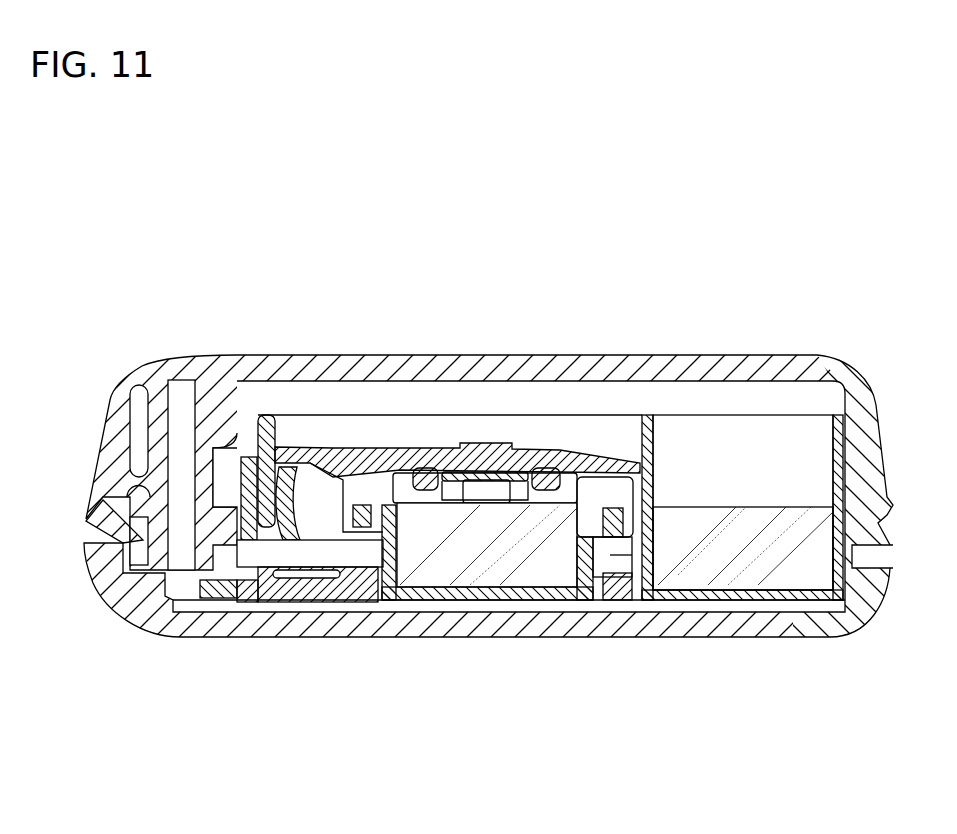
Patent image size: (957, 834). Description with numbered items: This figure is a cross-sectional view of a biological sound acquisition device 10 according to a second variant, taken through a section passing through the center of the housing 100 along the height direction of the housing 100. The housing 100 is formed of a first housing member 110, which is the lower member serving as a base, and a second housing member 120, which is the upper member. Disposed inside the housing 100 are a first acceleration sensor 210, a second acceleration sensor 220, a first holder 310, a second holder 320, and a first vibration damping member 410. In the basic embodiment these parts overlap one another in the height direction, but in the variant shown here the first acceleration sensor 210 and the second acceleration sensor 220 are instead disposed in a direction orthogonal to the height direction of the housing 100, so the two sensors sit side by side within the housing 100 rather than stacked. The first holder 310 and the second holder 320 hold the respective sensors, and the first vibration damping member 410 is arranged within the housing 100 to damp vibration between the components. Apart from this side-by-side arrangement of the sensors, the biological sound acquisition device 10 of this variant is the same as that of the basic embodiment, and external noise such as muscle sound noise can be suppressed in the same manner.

The biological sound acquisition device 10 is at (150, 283).
The housing 100 is at (215, 729).
The first housing member 110 is at (130, 583).
The second housing member 120 is at (108, 433).
The first acceleration sensor 210 is at (460, 533).
The second acceleration sensor 220 is at (723, 547).
The first holder 310 is at (517, 593).
The second holder 320 is at (777, 600).
The first vibration damping member 410 is at (493, 440).